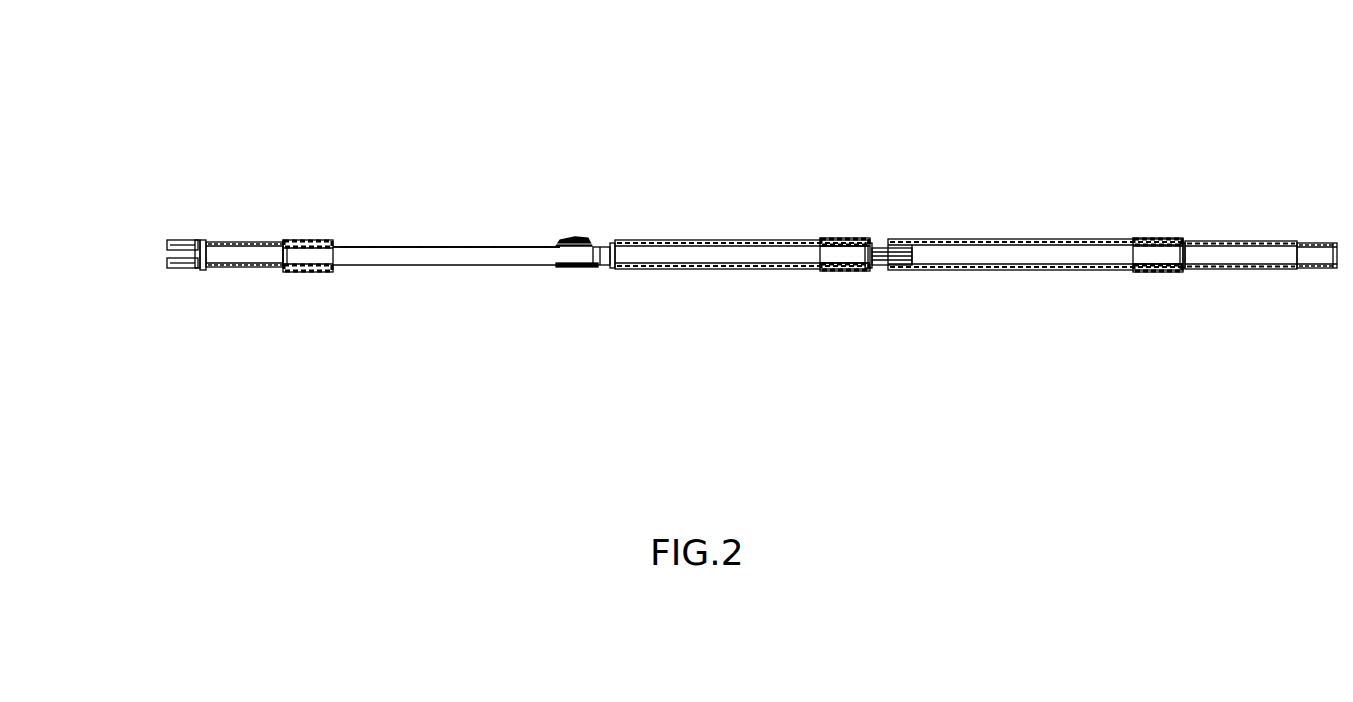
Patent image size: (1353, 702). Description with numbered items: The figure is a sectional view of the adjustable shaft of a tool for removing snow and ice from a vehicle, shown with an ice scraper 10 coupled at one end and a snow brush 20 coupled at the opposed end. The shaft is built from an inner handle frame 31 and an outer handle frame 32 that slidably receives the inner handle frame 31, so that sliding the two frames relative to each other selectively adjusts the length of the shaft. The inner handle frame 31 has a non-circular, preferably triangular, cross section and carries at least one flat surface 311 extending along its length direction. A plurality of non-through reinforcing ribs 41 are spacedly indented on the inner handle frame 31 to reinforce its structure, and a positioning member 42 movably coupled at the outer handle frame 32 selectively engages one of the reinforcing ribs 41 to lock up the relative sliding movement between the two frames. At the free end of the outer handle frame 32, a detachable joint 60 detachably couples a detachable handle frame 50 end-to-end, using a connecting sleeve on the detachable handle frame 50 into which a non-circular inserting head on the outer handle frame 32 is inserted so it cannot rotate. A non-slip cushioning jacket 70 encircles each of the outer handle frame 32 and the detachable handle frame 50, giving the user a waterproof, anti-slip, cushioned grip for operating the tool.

The ice scraper 10 is at (1328, 268).
The snow brush 20 is at (182, 267).
The inner handle frame 31 is at (443, 267).
The flat surface 311 is at (400, 238).
The outer handle frame 32 is at (705, 269).
The reinforcing rib 41 is at (490, 238).
The positioning member 42 is at (575, 240).
The detachable handle frame 50 is at (1038, 270).
The detachable joint 60 is at (307, 240).
The non-slip cushioning jacket 70 is at (727, 243).